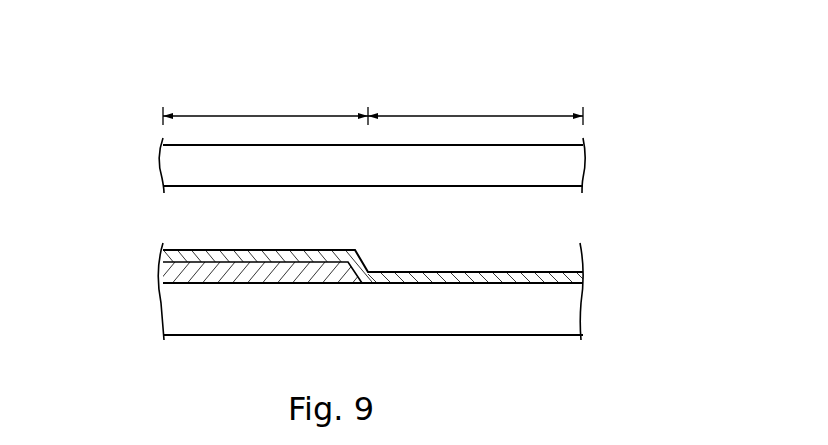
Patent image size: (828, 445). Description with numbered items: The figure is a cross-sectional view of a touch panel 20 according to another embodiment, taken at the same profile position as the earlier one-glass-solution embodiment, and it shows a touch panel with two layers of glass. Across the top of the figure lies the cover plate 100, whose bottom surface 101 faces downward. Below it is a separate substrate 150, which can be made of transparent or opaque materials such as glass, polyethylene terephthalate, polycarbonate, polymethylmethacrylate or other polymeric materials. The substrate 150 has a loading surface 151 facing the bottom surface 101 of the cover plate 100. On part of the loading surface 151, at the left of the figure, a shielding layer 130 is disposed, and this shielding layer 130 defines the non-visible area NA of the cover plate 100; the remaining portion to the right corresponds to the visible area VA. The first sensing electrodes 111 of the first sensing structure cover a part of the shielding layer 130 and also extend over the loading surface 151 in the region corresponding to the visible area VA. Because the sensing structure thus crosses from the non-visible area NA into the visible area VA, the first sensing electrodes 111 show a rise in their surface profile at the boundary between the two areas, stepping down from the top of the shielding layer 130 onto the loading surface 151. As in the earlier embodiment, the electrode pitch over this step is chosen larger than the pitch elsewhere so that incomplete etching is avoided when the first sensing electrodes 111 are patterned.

The touch panel 20 is at (69, 51).
The cover plate 100 is at (570, 163).
The bottom surface 101 is at (553, 186).
The first sensing electrodes 111 is at (172, 256).
The shielding layer 130 is at (175, 277).
The substrate 150 is at (575, 317).
The loading surface 151 is at (578, 272).
The non-visible area NA is at (265, 105).
The visible area VA is at (475, 105).